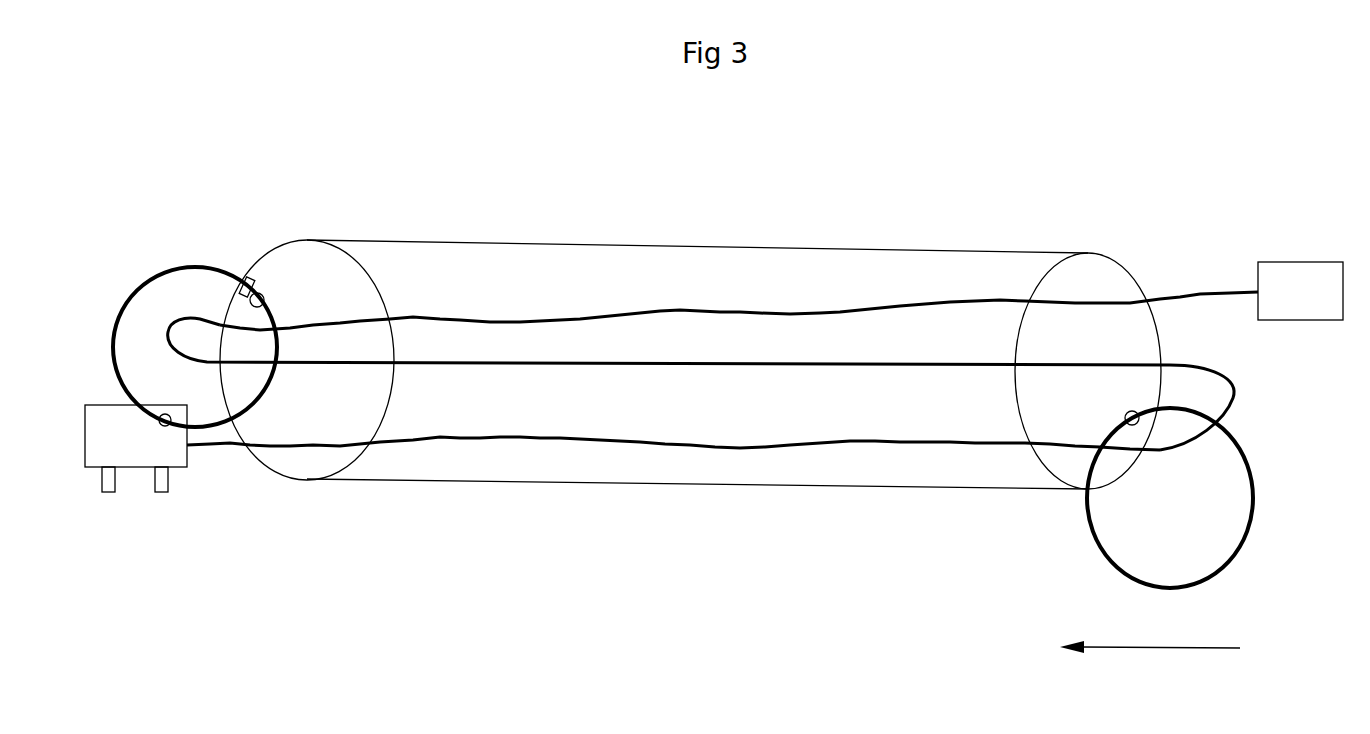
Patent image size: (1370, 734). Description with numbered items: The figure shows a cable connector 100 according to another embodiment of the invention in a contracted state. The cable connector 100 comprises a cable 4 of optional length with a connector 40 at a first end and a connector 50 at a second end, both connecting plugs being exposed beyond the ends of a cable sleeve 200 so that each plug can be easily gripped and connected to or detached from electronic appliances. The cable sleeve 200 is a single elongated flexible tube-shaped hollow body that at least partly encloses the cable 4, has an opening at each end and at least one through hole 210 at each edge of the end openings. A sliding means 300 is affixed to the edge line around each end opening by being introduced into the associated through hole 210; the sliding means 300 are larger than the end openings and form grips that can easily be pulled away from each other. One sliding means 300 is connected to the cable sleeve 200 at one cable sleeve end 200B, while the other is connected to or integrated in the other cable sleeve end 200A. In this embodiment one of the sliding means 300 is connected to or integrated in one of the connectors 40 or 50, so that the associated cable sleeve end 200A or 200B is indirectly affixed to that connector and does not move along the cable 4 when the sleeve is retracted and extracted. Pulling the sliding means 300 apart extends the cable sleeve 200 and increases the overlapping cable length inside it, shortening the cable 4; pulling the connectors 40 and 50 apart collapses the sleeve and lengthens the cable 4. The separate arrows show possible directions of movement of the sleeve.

The cable connector 100 is at (607, 187).
The cable sleeve 200 is at (695, 468).
The cable sleeve end 200A is at (382, 500).
The cable sleeve end 200B is at (987, 530).
The through hole 210 is at (258, 265).
The sliding means 300 is at (152, 255).
The cable 4 is at (1203, 280).
The connector 40 is at (112, 440).
The connector 50 is at (1308, 288).